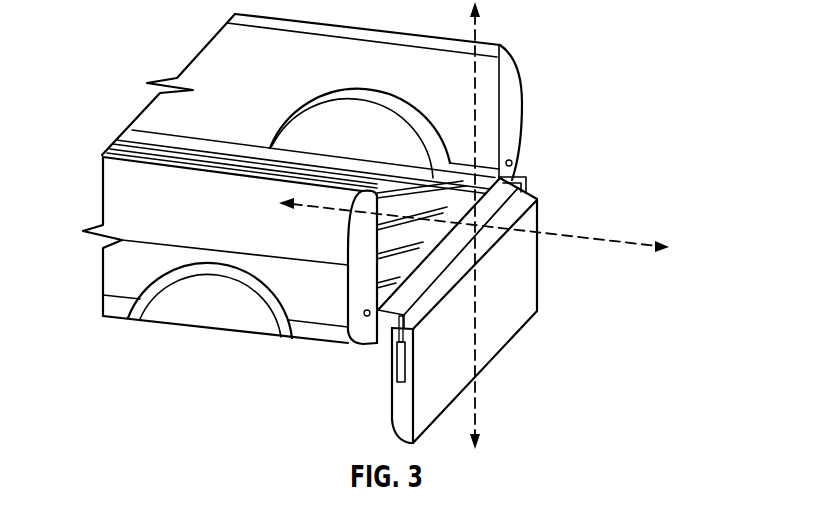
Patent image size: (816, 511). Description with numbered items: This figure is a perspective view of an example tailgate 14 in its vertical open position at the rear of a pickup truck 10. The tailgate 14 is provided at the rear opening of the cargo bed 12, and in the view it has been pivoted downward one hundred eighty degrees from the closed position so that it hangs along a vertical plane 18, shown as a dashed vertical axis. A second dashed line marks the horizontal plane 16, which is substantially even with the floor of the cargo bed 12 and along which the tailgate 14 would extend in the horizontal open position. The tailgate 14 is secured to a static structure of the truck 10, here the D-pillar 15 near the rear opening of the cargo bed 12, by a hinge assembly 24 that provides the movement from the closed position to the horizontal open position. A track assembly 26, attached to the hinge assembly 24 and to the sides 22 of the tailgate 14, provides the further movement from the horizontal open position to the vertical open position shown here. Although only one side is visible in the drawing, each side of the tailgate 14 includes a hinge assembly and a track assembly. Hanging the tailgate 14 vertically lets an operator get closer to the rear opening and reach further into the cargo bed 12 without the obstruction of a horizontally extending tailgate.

The pickup truck 10 is at (118, 188).
The cargo bed 12 is at (300, 166).
The tailgate 14 is at (510, 322).
The D-pillar 15 is at (510, 90).
The horizontal plane 16 is at (600, 240).
The vertical plane 18 is at (480, 30).
The sides of the tailgate 22 is at (400, 405).
The hinge assembly 24 is at (544, 166).
The track assembly 26 is at (380, 356).